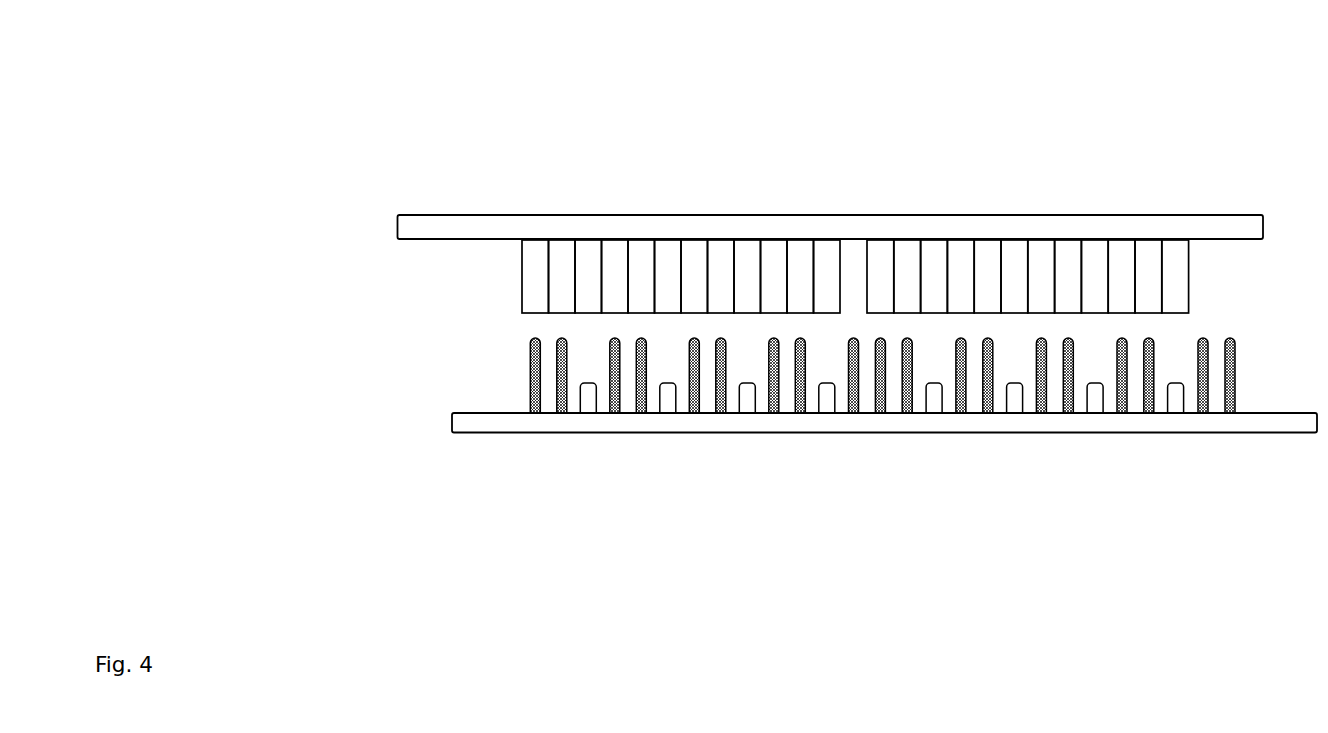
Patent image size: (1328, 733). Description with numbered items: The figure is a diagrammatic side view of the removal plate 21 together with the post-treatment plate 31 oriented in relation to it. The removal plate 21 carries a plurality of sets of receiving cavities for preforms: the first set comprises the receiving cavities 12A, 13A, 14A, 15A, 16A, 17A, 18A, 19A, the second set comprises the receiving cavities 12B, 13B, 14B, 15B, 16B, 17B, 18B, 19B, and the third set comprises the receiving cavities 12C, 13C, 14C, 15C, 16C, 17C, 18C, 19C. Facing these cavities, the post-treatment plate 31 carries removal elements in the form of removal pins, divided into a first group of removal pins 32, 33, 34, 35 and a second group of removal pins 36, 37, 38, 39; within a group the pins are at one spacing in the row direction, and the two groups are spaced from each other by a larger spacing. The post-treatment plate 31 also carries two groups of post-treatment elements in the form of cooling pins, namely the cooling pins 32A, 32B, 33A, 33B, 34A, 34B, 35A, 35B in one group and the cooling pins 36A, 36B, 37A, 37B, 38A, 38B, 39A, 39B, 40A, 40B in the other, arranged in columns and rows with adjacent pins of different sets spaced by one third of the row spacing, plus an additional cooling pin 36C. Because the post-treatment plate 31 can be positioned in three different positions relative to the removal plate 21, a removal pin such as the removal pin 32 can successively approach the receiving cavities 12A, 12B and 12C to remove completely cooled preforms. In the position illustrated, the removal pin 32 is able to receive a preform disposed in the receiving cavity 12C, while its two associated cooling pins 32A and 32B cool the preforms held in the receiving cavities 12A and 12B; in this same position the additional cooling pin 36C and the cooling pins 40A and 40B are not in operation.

The removal plate 21 is at (432, 215).
The post-treatment plate 31 is at (473, 433).
The receiving cavity 12A is at (535, 325).
The receiving cavity 12B is at (562, 325).
The receiving cavity 12C is at (588, 325).
The receiving cavity 13A is at (615, 325).
The receiving cavity 13B is at (641, 325).
The receiving cavity 13C is at (668, 325).
The receiving cavity 14A is at (694, 325).
The receiving cavity 14B is at (721, 325).
The receiving cavity 14C is at (747, 325).
The receiving cavity 15A is at (774, 325).
The receiving cavity 15B is at (800, 325).
The receiving cavity 15C is at (827, 325).
The receiving cavity 16A is at (880, 325).
The receiving cavity 16B is at (907, 325).
The receiving cavity 16C is at (934, 325).
The receiving cavity 17A is at (961, 325).
The receiving cavity 17B is at (988, 325).
The receiving cavity 17C is at (1015, 325).
The receiving cavity 18A is at (1041, 325).
The receiving cavity 18B is at (1068, 325).
The receiving cavity 18C is at (1095, 325).
The receiving cavity 19A is at (1122, 325).
The receiving cavity 19B is at (1149, 325).
The receiving cavity 19C is at (1176, 325).
The cooling pin 32A is at (535, 325).
The cooling pin 32B is at (562, 325).
The removal pin 32 is at (588, 325).
The cooling pin 33A is at (615, 325).
The cooling pin 33B is at (641, 325).
The removal pin 33 is at (668, 325).
The cooling pin 34A is at (694, 325).
The cooling pin 34B is at (721, 325).
The removal pin 34 is at (747, 325).
The cooling pin 35A is at (774, 325).
The cooling pin 35B is at (800, 325).
The removal pin 35 is at (827, 325).
The additional cooling pin 36C is at (854, 330).
The cooling pin 36A is at (880, 325).
The cooling pin 36B is at (907, 325).
The removal pin 36 is at (934, 325).
The cooling pin 37A is at (961, 325).
The cooling pin 37B is at (988, 325).
The removal pin 37 is at (1015, 325).
The cooling pin 38A is at (1041, 325).
The cooling pin 38B is at (1068, 325).
The removal pin 38 is at (1095, 325).
The cooling pin 39A is at (1122, 325).
The cooling pin 39B is at (1149, 325).
The removal pin 39 is at (1176, 325).
The cooling pin 40A is at (1203, 332).
The cooling pin 40B is at (1230, 332).